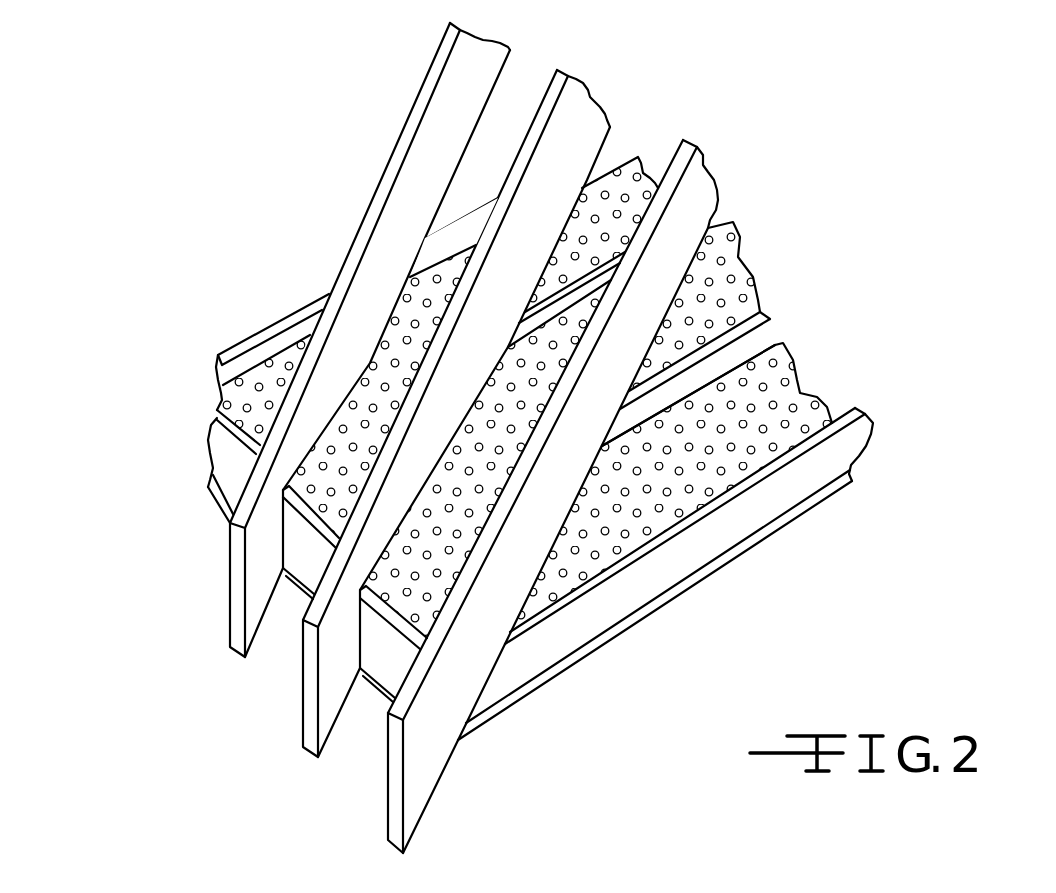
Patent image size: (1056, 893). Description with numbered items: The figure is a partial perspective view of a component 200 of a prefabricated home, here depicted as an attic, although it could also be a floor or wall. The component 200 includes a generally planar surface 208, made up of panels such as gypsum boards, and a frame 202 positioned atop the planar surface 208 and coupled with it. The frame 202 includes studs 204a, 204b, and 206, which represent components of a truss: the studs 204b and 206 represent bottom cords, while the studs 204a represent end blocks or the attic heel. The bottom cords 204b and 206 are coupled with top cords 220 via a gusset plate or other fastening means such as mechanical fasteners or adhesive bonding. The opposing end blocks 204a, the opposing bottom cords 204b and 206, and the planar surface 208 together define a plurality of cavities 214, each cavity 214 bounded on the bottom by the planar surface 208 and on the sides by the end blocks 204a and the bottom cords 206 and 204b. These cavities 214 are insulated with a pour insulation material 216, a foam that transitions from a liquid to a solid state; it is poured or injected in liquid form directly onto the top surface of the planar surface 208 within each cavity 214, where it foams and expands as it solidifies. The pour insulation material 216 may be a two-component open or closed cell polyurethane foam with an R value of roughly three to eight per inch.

The component 200 is at (772, 185).
The frame 202 is at (878, 392).
The studs (end blocks) 204a is at (313, 565).
The studs (bottom cords) 204b is at (698, 542).
The stud (bottom cord) 206 is at (570, 297).
The planar surface 208 is at (556, 683).
The cavities 214 is at (779, 377).
The pour insulation material 216 is at (603, 518).
The top cords 220 is at (428, 762).